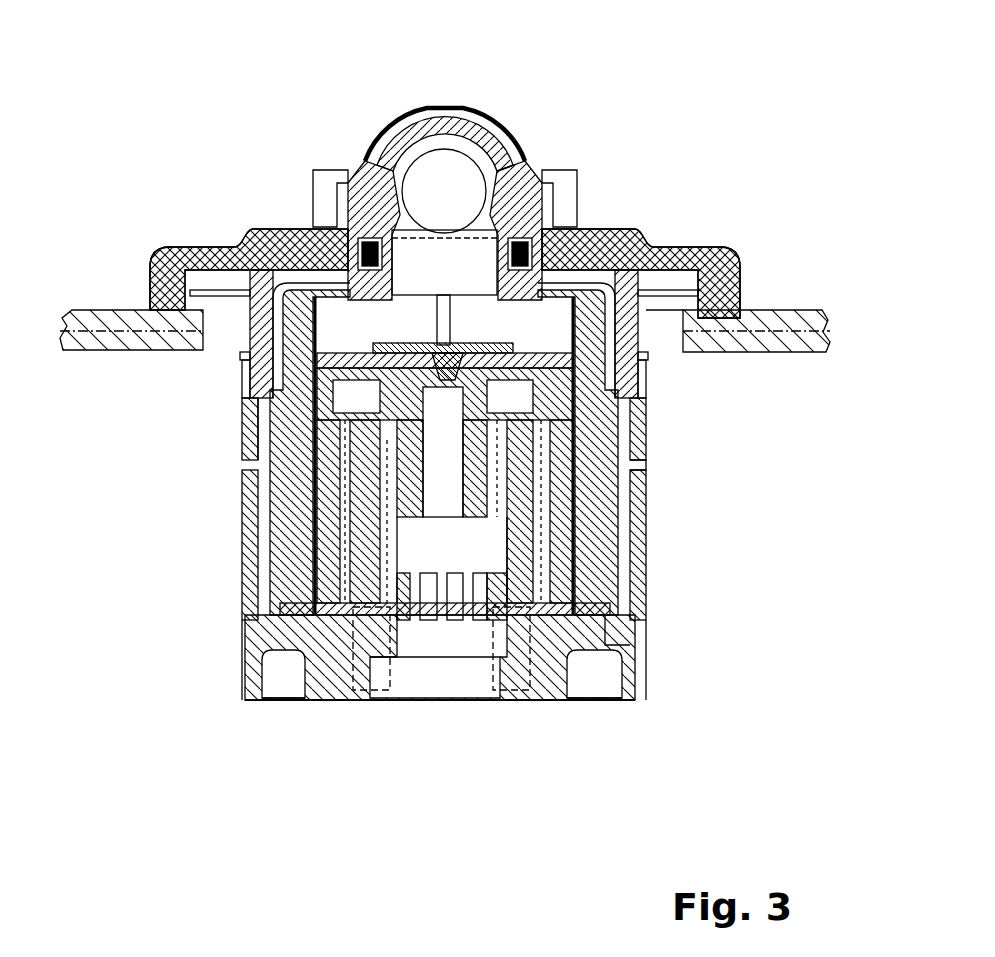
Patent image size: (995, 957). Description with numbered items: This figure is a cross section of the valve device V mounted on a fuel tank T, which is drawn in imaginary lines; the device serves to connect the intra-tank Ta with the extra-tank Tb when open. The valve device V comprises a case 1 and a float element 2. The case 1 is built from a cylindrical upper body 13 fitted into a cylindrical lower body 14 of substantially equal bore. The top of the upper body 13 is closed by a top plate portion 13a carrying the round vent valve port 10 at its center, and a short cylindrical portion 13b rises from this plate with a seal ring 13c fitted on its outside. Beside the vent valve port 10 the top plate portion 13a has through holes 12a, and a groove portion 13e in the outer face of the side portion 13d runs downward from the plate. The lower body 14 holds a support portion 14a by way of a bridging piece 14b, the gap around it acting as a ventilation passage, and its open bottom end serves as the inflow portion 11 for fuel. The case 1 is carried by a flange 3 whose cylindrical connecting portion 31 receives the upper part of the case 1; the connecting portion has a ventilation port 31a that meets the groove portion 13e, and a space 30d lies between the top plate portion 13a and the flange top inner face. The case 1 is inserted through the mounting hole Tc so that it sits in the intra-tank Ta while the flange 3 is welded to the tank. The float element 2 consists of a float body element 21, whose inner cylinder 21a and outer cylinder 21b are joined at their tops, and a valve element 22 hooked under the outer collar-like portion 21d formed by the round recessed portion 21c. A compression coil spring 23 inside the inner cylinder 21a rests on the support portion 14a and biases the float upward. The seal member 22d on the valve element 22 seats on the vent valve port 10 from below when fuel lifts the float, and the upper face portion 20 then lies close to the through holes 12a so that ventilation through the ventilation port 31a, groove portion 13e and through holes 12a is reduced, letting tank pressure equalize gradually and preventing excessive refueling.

The case 1 is at (240, 543).
The float element 2 is at (646, 532).
The flange 3 is at (752, 288).
The vent valve port 10 is at (447, 343).
The inflow portion 11 is at (600, 700).
The through holes 12a is at (293, 275).
The upper body 13 is at (242, 462).
The top plate portion 13a is at (593, 262).
The short cylindrical portion 13b is at (520, 170).
The seal ring 13c is at (537, 222).
The side portion 13d is at (242, 430).
The groove portion 13e is at (245, 246).
The lower body 14 is at (257, 638).
The support portion 14a is at (413, 660).
The bridging piece 14b is at (293, 642).
The upper face portion 20 is at (375, 180).
The float body element 21 is at (640, 555).
The inner cylinder 21a is at (520, 590).
The outer cylinder 21b is at (620, 615).
The round recessed portion 21c is at (646, 455).
The outer collar-like portion 21d is at (646, 423).
The valve element 22 is at (645, 262).
The seal member 22d is at (470, 340).
The compression coil spring 23 is at (320, 645).
The space 30d is at (262, 280).
The cylindrical connecting portion 31 is at (250, 356).
The ventilation port 31a is at (246, 365).
The valve device V is at (604, 124).
The fuel tank T is at (805, 314).
The intra-tank Ta is at (788, 560).
The extra-tank Tb is at (788, 138).
The mounting hole Tc is at (665, 345).